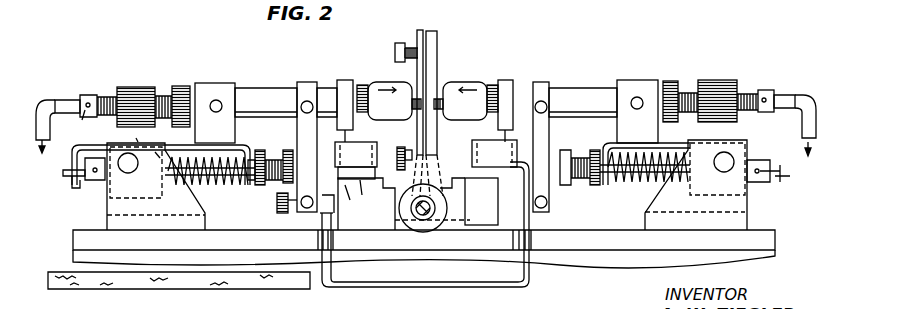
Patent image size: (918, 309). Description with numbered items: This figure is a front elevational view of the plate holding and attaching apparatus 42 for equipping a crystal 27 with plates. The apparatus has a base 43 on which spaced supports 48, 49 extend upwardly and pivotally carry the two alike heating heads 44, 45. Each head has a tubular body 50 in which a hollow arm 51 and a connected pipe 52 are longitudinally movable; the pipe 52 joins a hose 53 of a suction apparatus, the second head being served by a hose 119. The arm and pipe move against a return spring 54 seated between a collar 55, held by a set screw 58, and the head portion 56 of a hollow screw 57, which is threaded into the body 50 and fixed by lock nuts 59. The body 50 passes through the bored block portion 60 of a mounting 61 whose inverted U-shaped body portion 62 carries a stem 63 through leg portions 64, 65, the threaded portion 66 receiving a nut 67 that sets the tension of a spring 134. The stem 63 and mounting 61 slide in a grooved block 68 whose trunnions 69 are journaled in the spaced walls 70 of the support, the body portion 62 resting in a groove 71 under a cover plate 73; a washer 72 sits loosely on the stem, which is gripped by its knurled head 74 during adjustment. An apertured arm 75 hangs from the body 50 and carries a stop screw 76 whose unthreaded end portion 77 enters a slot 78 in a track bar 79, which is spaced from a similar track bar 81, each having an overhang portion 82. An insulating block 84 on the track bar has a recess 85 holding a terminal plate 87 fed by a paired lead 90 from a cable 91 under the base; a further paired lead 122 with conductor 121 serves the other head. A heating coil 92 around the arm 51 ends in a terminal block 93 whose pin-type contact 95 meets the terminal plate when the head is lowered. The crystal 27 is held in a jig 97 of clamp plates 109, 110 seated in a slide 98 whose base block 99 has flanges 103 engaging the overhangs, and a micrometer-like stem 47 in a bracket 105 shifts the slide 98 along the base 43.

The crystal 27 is at (428, 75).
The plate holding and attaching apparatus 42 is at (499, 80).
The base 43 is at (606, 243).
The heating head 44 is at (266, 86).
The heating head 45 is at (578, 86).
The micrometer-like stem 47 is at (438, 236).
The support 48 is at (108, 222).
The support 49 is at (748, 212).
The tubular body 50 is at (247, 88).
The hollow arm 51 is at (383, 98).
The pipe 52 is at (68, 100).
The hose 53 is at (45, 96).
The return spring 54 is at (105, 96).
The collar 55 is at (87, 103).
The head portion 56 is at (140, 88).
The hollow screw 57 is at (163, 96).
The set screw 58 is at (85, 118).
The lock nuts 59 is at (180, 87).
The bored block portion 60 is at (214, 84).
The mounting 61 is at (233, 138).
The inverted U-shaped body portion 62 is at (217, 145).
The stem 63 is at (65, 174).
The leg portion 64 is at (74, 187).
The leg portion 65 is at (250, 188).
The threaded portion 66 is at (268, 158).
The nut 67 is at (249, 183).
The grooved block 68 is at (158, 162).
The trunnions 69 is at (126, 173).
The spaced walls 70 is at (200, 185).
The groove 71 is at (158, 140).
The washer 72 is at (93, 182).
The cover plate 73 is at (138, 142).
The knurled head 74 is at (286, 148).
The apertured arm 75 is at (305, 82).
The stop screw 76 is at (284, 215).
The unthreaded end portion 77 is at (335, 210).
The slot 78 is at (360, 205).
The track bar 79 is at (376, 200).
The track bar 81 is at (510, 222).
The overhang portion 82 is at (384, 175).
The insulating block 84 is at (384, 142).
The recess 85 is at (355, 150).
The terminal plate 87 is at (348, 183).
The paired lead 90 is at (324, 268).
The cable 91 is at (232, 280).
The heating coil 92 is at (400, 98).
The terminal block 93 is at (348, 80).
The pin-type contact 95 is at (338, 135).
The jig 97 is at (430, 33).
The slide 98 is at (463, 178).
The base block 99 is at (462, 203).
The flanges 103 is at (398, 203).
The bracket 105 is at (382, 236).
The clamp plate 109 is at (415, 33).
The clamp plate 110 is at (438, 38).
The hose 119 is at (794, 94).
The conductor 121 is at (522, 166).
The paired lead 122 is at (465, 287).
The spring 134 is at (205, 195).